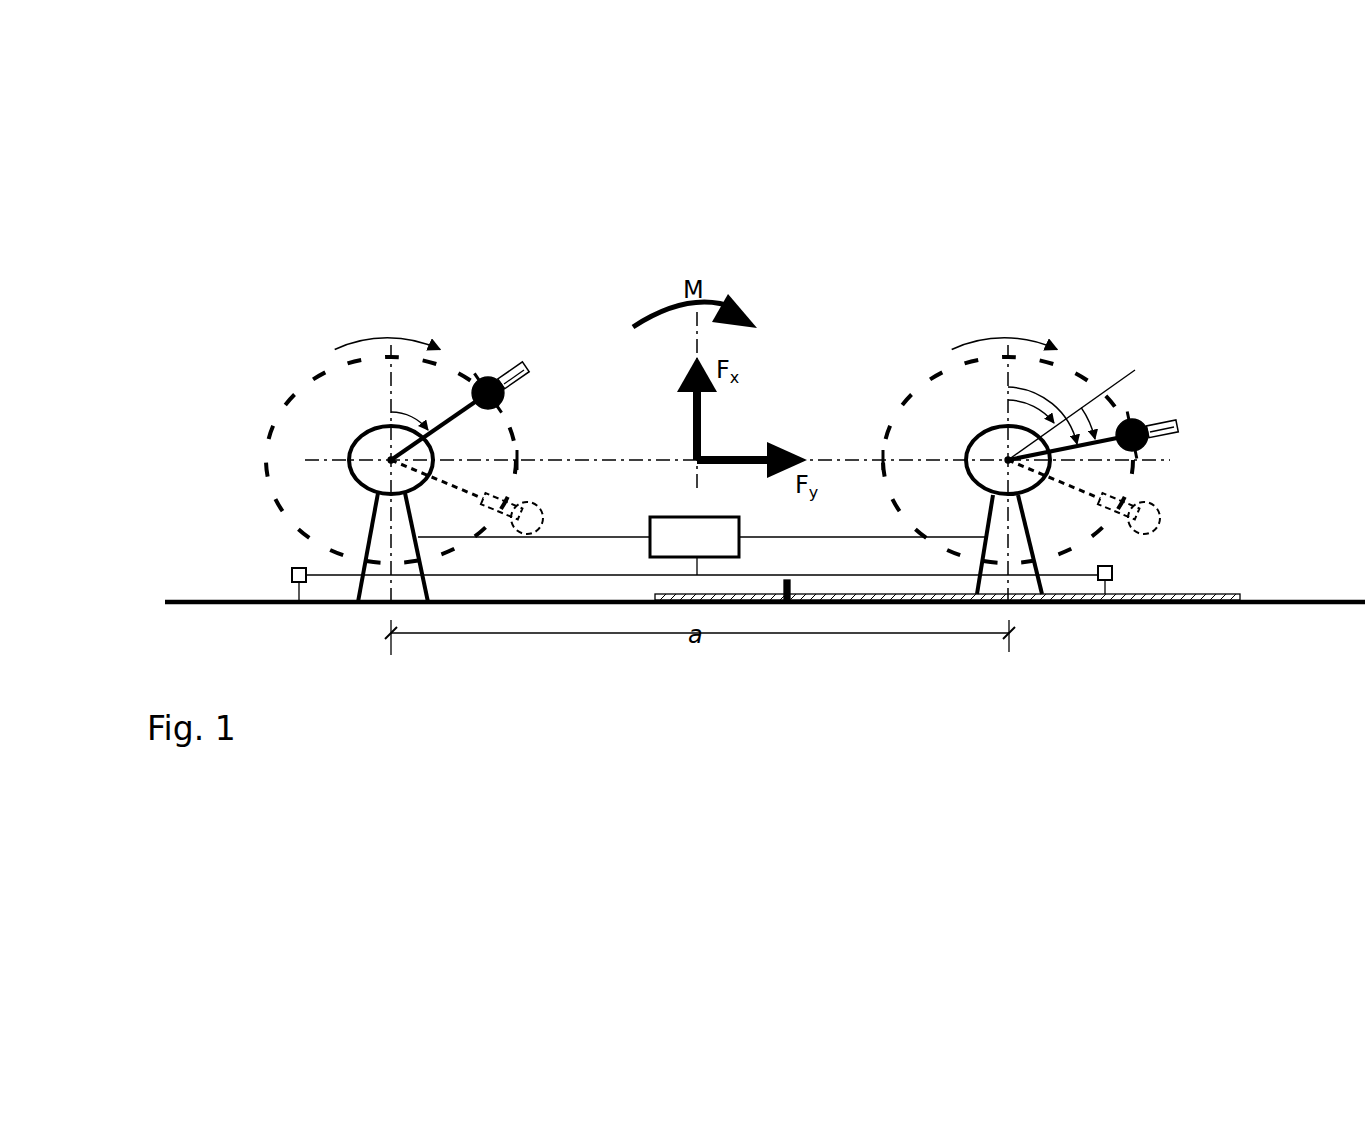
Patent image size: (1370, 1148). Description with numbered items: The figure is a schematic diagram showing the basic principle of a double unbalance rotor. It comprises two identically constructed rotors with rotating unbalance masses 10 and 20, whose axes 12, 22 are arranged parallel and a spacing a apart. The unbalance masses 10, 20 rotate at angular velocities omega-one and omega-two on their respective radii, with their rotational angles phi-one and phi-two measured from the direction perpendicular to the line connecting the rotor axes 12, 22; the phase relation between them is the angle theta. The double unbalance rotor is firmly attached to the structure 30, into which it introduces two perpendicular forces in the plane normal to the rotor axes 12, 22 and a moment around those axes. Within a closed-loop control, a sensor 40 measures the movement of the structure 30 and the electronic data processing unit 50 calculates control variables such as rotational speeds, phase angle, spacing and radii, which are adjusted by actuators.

The unbalance mass 10 is at (497, 378).
The rotor axis 12 is at (391, 460).
The unbalance mass 20 is at (1138, 430).
The rotor axis 22 is at (1008, 460).
The structure 30 is at (1168, 602).
The sensor 40 is at (293, 568).
The EDV 50 is at (650, 522).